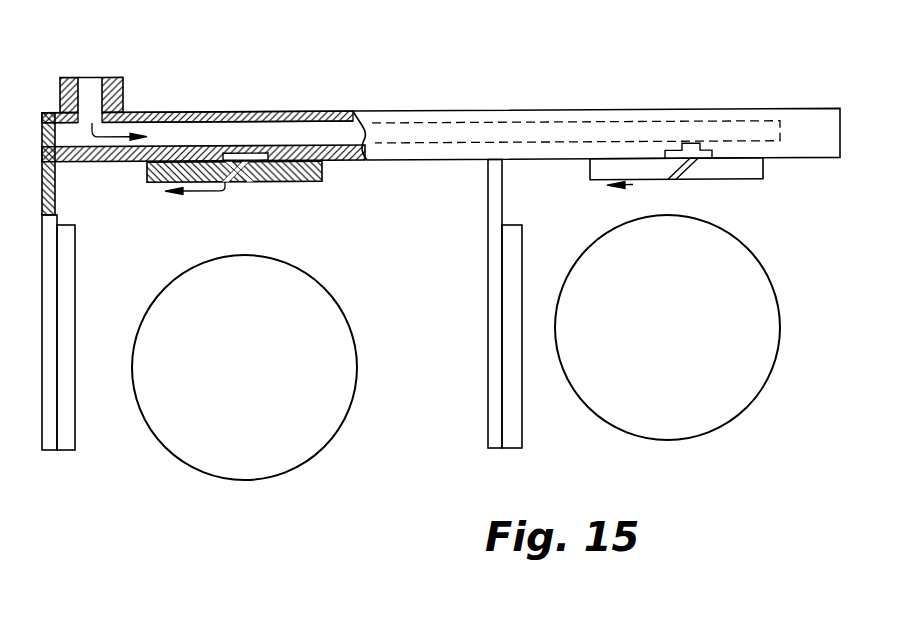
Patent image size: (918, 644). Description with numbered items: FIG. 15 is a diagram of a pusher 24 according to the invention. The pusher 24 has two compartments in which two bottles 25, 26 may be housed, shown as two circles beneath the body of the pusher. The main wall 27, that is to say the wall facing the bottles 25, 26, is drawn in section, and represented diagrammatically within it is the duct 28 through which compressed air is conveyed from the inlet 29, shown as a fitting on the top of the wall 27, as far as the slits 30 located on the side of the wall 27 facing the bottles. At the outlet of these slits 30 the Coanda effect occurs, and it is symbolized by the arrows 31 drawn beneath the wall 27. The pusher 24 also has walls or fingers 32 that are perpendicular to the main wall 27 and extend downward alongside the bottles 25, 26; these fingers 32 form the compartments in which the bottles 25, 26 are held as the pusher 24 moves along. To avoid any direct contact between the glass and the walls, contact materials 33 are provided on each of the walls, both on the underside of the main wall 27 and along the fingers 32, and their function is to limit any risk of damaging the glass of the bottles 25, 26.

The pusher 24 is at (681, 86).
The bottle 25 is at (320, 443).
The bottle 26 is at (717, 422).
The main wall 27 is at (421, 111).
The duct 28 is at (222, 132).
The inlet 29 is at (92, 92).
The slits 30 is at (233, 183).
The arrows 31 is at (190, 191).
The walls or fingers 32 is at (48, 322).
The contact materials 33 is at (307, 183).